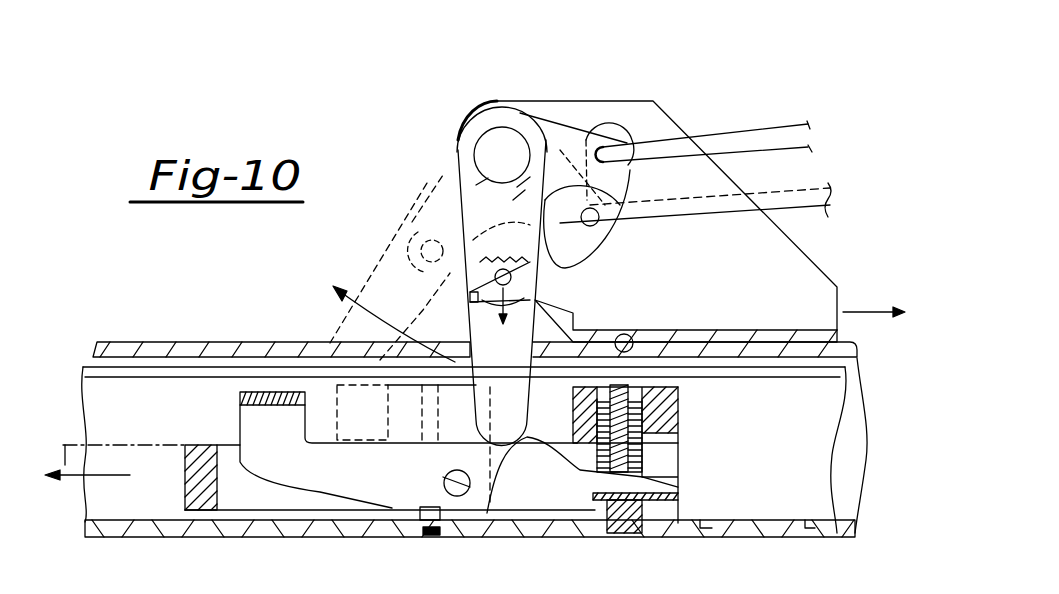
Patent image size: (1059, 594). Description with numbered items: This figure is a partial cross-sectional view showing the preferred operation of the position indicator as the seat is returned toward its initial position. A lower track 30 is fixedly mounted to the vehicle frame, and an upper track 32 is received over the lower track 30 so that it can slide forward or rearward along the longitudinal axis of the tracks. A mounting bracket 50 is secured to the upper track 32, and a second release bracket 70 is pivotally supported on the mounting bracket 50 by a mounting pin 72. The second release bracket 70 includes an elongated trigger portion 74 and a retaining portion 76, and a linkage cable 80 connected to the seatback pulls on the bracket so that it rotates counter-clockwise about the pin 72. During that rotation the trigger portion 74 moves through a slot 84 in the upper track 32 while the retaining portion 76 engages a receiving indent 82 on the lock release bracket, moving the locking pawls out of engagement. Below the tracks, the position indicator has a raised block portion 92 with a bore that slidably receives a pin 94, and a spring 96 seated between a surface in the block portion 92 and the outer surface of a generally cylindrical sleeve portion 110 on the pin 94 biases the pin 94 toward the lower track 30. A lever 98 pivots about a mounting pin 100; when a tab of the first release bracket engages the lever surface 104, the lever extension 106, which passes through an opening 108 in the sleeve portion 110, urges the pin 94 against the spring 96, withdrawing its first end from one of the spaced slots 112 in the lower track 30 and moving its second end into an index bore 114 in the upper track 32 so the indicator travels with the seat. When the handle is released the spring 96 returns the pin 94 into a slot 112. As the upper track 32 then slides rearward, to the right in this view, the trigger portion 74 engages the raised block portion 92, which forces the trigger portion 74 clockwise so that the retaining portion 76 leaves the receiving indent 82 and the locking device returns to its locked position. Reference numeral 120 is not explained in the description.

The lower track 30 is at (110, 526).
The upper track 32 is at (122, 348).
The mounting bracket 50 is at (742, 230).
The second release bracket 70 is at (459, 196).
The mounting pin 72 is at (497, 137).
The trigger portion 74 is at (502, 276).
The retaining portion 76 is at (487, 204).
The linkage cable 80 is at (726, 140).
The receiving indent 82 is at (487, 290).
The slot 84 is at (313, 347).
The raised block portion 92 is at (233, 495).
The pin 94 is at (620, 533).
The spring 96 is at (650, 430).
The lever 98 is at (354, 482).
The mounting pin 100 is at (445, 477).
The lever surface 104 is at (250, 392).
The lever extension 106 is at (658, 490).
The opening 108 is at (636, 533).
The sleeve portion 110 is at (670, 470).
The slot 112 is at (705, 525).
The index bore 114 is at (620, 335).
The link 120 is at (490, 512).